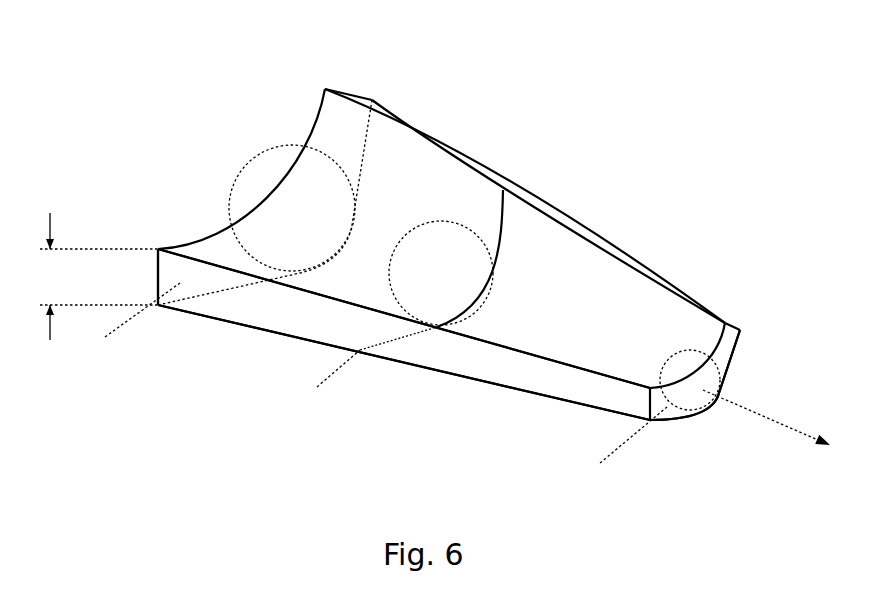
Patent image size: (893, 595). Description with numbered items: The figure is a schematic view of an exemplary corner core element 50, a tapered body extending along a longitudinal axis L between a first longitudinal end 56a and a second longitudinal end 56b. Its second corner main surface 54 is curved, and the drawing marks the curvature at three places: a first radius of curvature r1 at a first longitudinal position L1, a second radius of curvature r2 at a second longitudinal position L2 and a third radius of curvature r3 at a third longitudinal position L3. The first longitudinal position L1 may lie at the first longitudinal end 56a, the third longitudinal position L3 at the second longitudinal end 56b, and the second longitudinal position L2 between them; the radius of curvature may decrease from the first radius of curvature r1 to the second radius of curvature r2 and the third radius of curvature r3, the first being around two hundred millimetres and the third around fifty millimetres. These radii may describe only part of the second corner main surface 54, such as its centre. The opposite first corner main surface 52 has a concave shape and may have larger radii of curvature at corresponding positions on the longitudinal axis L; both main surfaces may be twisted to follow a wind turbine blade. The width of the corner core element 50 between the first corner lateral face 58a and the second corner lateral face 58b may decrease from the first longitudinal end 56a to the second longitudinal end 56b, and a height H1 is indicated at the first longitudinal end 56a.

The corner core element 50 is at (577, 313).
The first corner main surface 52 is at (352, 180).
The second corner main surface 54 is at (300, 299).
The first longitudinal end 56a is at (240, 253).
The second longitudinal end 56b is at (667, 413).
The first corner lateral face 58a is at (460, 358).
The second corner lateral face 58b is at (542, 210).
The first radius of curvature r1 is at (307, 175).
The second radius of curvature r2 is at (463, 247).
The third radius of curvature r3 is at (692, 358).
The longitudinal axis L is at (777, 423).
The first longitudinal position L1 is at (126, 328).
The second longitudinal position L2 is at (369, 373).
The third longitudinal position L3 is at (625, 451).
The first height H1 is at (92, 276).